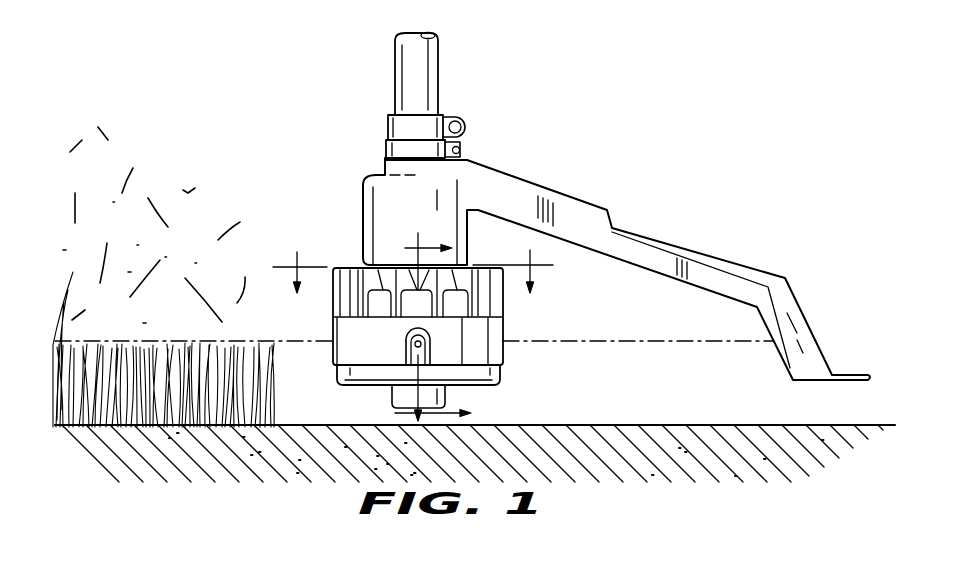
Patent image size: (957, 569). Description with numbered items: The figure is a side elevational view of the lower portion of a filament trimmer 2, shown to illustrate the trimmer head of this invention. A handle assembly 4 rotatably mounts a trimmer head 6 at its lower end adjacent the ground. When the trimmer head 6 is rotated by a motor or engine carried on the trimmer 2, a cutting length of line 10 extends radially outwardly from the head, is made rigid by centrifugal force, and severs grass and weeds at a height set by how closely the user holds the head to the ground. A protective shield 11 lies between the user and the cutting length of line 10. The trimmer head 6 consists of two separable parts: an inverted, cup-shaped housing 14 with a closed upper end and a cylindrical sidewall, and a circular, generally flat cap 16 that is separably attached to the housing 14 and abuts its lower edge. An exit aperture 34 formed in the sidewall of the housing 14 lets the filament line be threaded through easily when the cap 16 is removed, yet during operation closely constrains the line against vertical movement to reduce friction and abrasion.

The filament trimmer 2 is at (556, 224).
The handle assembly 4 is at (397, 52).
The trimmer head 6 is at (519, 363).
The cutting length of line 10 is at (678, 342).
The protective shield 11 is at (722, 255).
The housing 14 is at (345, 325).
The cap 16 is at (489, 387).
The exit aperture 34 is at (402, 342).